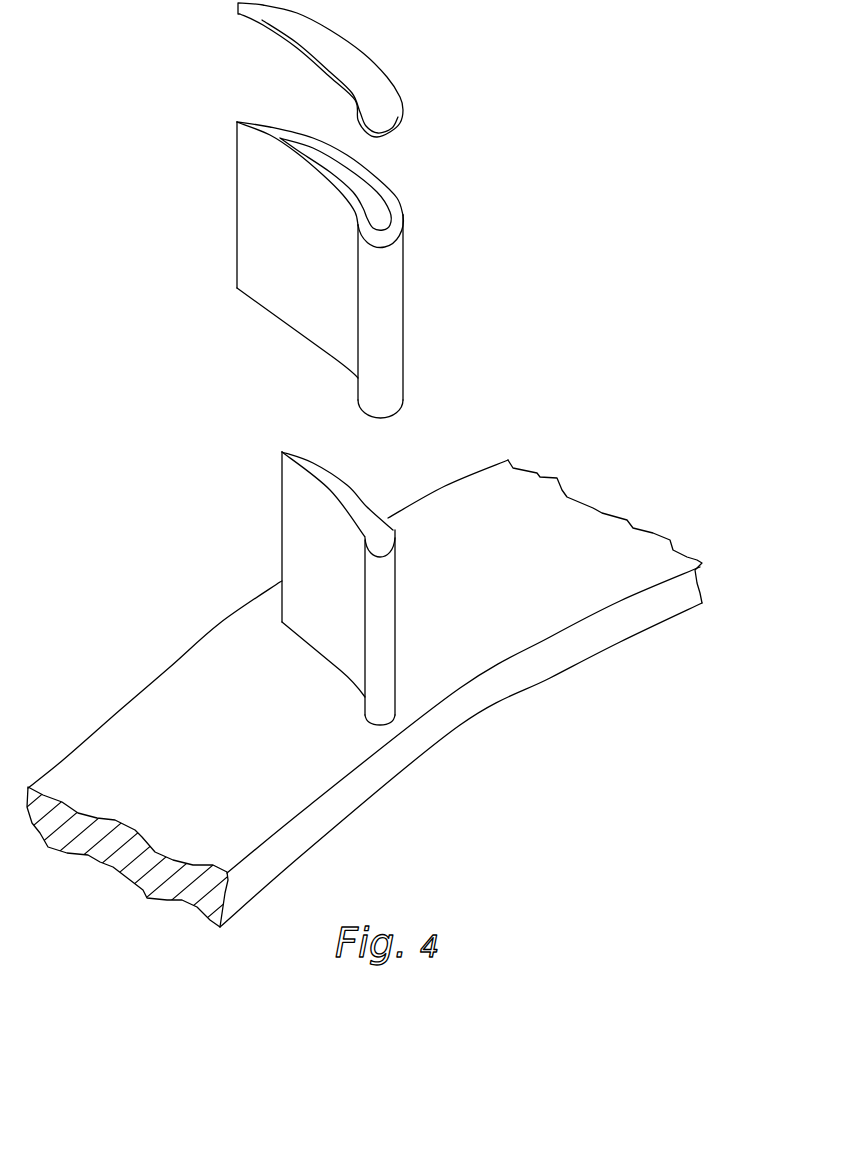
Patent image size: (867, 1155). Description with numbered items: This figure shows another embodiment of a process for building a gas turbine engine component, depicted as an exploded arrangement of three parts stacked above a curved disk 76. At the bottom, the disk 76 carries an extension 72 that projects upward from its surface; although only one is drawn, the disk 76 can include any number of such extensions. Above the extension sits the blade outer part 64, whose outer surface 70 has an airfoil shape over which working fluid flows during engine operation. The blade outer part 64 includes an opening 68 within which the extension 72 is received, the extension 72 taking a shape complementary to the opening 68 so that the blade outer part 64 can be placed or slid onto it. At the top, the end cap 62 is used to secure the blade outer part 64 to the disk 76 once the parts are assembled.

The end cap 62 is at (263, 17).
The blade outer part 64 is at (303, 270).
The opening 68 is at (382, 225).
The outer surface 70 is at (300, 240).
The extension 72 is at (305, 547).
The disk 76 is at (488, 528).